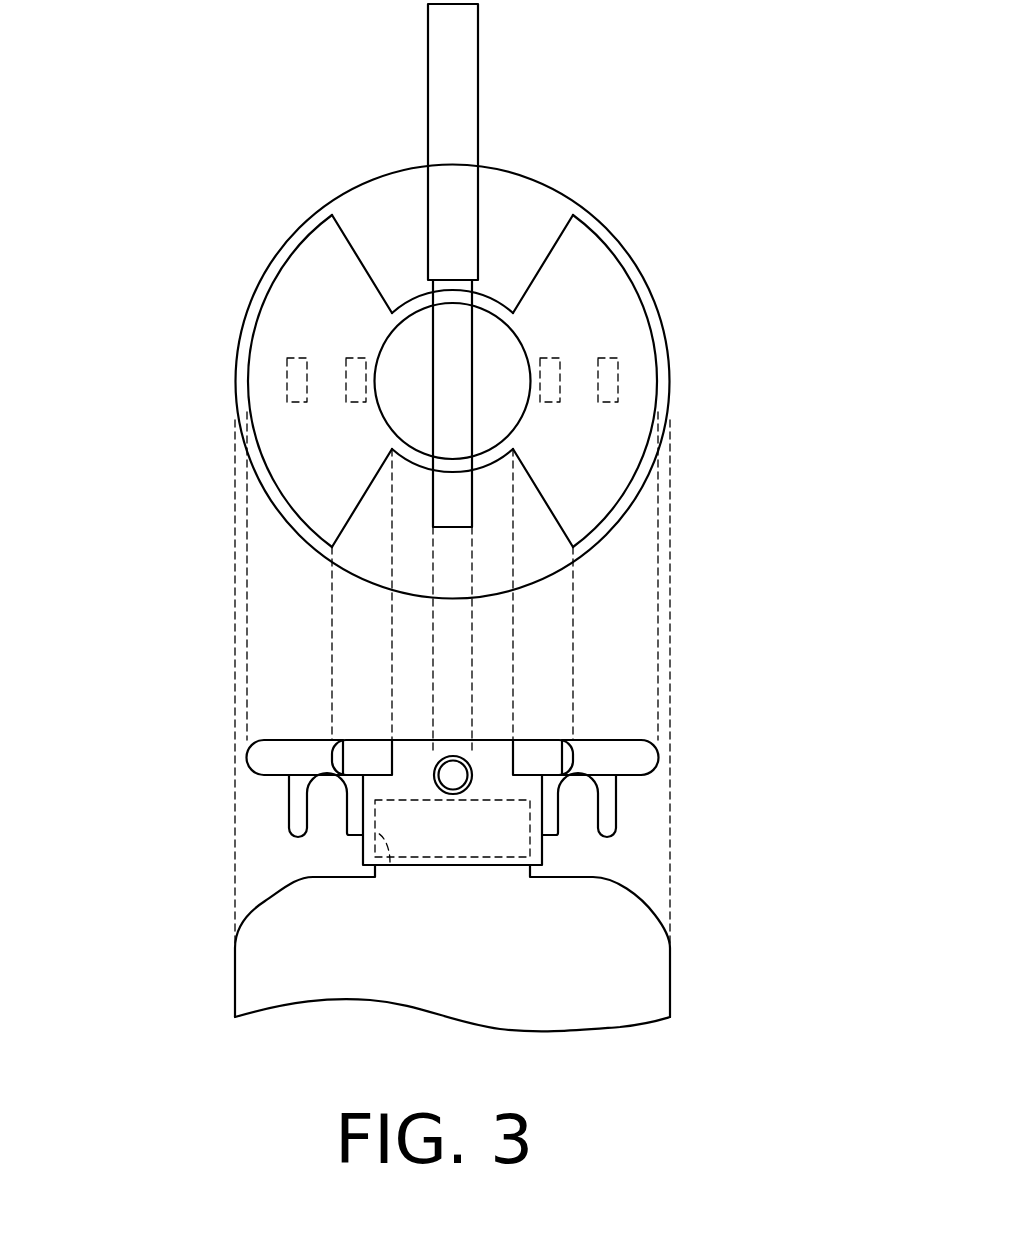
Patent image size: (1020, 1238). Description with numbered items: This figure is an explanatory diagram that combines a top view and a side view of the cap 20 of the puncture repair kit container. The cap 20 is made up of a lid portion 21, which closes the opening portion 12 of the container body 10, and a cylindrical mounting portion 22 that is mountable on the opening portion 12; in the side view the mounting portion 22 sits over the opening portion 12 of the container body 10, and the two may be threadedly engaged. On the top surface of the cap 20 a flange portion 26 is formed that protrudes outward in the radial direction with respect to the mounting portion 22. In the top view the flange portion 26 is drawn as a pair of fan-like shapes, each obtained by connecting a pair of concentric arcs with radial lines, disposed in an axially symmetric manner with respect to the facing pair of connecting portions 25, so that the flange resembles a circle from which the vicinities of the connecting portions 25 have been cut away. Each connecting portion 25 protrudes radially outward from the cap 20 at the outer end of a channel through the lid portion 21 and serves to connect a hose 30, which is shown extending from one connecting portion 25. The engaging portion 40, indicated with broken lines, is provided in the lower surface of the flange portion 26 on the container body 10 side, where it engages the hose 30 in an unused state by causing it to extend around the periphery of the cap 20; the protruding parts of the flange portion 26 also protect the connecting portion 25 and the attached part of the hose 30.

The container body 10 is at (543, 207).
The opening portion 12 is at (500, 845).
The cap 20 is at (426, 494).
The lid portion 21 is at (410, 305).
The mounting portion 22 is at (390, 862).
The connecting portion 25 is at (459, 512).
The flange portion 26 is at (610, 468).
The hose 30 is at (465, 57).
The engaging portion 40 is at (618, 377).